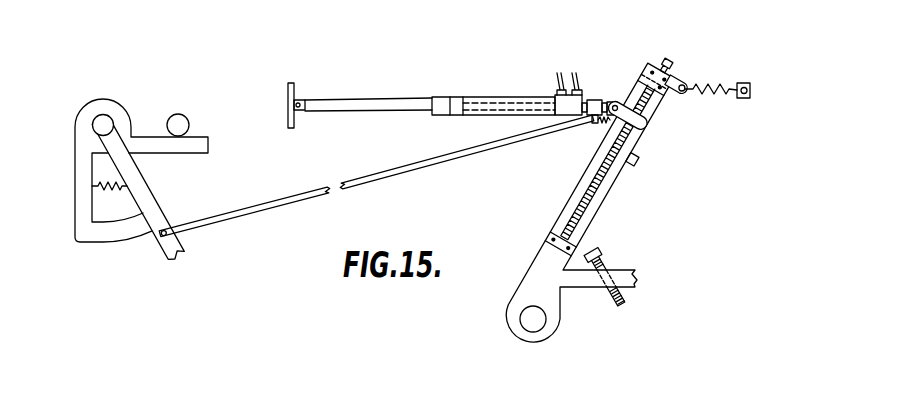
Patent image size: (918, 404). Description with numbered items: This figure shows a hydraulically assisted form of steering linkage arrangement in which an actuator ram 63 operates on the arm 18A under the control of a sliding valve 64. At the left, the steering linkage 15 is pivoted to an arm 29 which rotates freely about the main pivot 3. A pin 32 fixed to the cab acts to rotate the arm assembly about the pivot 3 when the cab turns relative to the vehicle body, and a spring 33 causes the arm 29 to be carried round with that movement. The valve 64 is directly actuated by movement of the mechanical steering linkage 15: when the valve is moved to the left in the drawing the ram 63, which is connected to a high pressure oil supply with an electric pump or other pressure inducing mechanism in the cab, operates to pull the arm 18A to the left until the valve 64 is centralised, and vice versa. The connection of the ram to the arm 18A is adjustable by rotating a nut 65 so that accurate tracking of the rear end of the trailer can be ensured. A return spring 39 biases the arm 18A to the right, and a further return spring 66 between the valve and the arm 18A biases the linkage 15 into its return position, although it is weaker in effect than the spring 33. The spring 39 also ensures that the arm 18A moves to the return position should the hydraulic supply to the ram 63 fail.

The main pivot 3 is at (108, 116).
The steering linkage 15 is at (275, 202).
The arm 18A is at (578, 193).
The arm 29 is at (147, 197).
The pin 32 is at (178, 113).
The spring 33 is at (122, 192).
The return spring 39 is at (711, 97).
The actuator ram 63 is at (455, 116).
The sliding valve 64 is at (598, 101).
The nut 65 is at (641, 123).
The return spring 66 is at (602, 122).